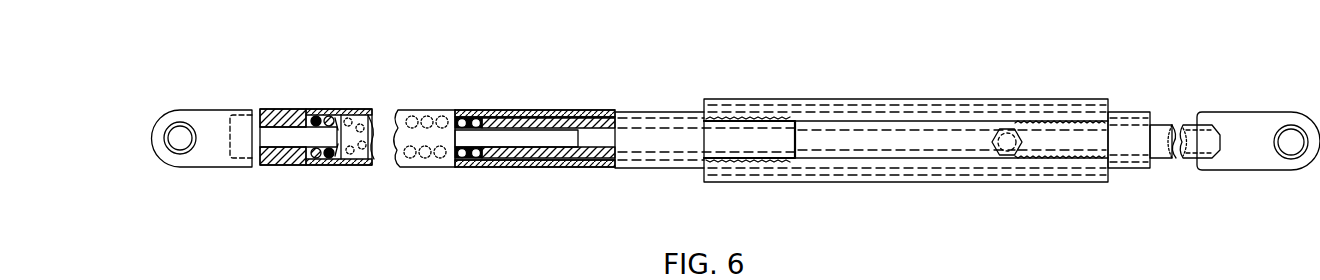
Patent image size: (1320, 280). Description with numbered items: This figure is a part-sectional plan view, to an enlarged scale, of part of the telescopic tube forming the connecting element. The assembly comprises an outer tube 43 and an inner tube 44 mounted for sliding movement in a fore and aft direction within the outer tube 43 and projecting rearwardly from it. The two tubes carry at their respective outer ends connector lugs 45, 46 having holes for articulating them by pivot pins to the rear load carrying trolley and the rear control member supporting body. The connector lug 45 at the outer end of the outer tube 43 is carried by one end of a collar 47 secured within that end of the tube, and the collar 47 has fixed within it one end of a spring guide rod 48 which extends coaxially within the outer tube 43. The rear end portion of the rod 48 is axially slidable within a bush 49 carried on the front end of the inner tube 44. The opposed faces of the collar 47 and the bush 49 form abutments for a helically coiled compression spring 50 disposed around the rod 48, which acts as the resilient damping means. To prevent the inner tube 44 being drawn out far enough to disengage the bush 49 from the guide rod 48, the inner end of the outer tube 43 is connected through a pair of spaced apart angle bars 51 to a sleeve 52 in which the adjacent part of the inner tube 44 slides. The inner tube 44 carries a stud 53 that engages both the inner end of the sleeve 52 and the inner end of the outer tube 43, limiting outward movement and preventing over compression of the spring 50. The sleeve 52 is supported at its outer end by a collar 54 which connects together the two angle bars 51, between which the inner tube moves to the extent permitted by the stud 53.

The outer tube 43 is at (652, 112).
The inner tube 44 is at (555, 122).
The connector lug 45 is at (202, 113).
The connector lug 46 is at (1240, 125).
The collar 47 is at (290, 163).
The spring guide rod 48 is at (486, 126).
The bush 49 is at (480, 116).
The helically coiled compression spring 50 is at (332, 165).
The angle bars 51 is at (847, 103).
The sleeve 52 is at (1052, 140).
The stud 53 is at (1005, 147).
The collar 54 is at (1123, 120).